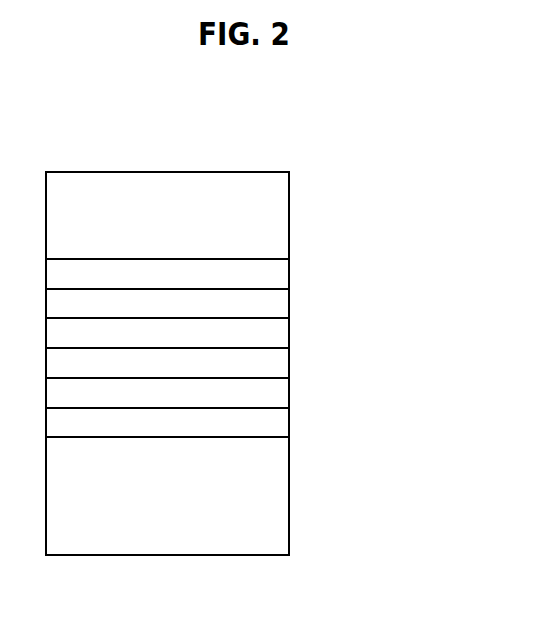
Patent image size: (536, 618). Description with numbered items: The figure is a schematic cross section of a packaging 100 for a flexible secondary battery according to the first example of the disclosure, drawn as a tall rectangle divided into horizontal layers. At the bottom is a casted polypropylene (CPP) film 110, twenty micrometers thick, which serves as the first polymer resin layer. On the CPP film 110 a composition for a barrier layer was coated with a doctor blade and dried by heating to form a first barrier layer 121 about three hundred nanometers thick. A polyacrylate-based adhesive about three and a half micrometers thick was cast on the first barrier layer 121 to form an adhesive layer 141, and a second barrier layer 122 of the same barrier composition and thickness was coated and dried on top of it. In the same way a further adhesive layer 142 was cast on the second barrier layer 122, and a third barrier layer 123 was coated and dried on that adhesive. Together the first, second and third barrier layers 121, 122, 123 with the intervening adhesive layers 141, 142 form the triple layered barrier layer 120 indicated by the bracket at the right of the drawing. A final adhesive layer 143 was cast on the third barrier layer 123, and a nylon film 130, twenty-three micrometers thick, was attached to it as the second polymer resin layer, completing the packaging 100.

The packaging 100 is at (108, 120).
The casted polypropylene (CPP) film 110 is at (290, 502).
The triple layered barrier layer 120 is at (392, 290).
The first barrier layer 121 is at (290, 420).
The second barrier layer 122 is at (290, 360).
The third barrier layer 123 is at (290, 300).
The nylon film 130 is at (290, 213).
The adhesive layer 141 is at (290, 392).
The adhesive layer 142 is at (290, 333).
The adhesive layer 143 is at (290, 275).